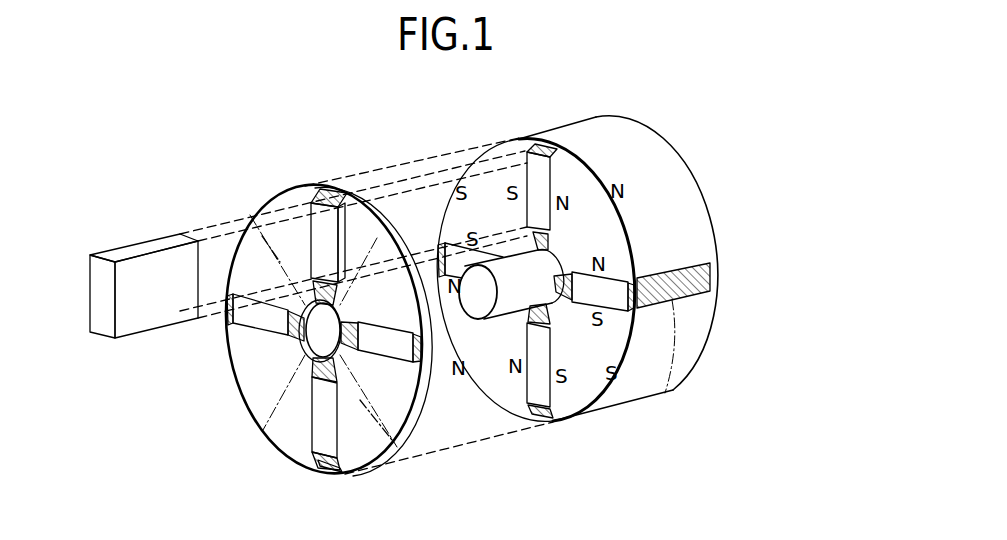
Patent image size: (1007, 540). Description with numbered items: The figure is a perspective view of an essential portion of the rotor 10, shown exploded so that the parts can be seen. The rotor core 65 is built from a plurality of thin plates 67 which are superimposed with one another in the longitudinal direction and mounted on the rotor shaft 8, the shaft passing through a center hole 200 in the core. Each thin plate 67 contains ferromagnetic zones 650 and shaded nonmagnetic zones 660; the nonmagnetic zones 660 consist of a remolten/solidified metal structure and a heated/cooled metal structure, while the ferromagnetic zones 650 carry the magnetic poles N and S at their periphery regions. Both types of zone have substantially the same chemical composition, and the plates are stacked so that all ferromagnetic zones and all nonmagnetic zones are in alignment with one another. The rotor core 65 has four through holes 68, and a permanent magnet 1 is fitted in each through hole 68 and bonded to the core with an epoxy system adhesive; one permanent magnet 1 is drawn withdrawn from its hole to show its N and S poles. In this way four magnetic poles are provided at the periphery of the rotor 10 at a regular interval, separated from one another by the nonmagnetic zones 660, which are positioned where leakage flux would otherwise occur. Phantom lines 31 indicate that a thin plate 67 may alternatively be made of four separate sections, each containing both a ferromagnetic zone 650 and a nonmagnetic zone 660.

The permanent magnet 1 is at (157, 256).
The rotor shaft 8 is at (507, 308).
The rotor 10 is at (639, 124).
The phantom lines 31 is at (378, 420).
The rotor core 65 is at (651, 173).
The thin plate 67 is at (272, 440).
The through hole 68 is at (339, 235).
The center hole 200 is at (317, 338).
The ferromagnetic zone 650 is at (274, 228).
The nonmagnetic zone 660 is at (327, 464).